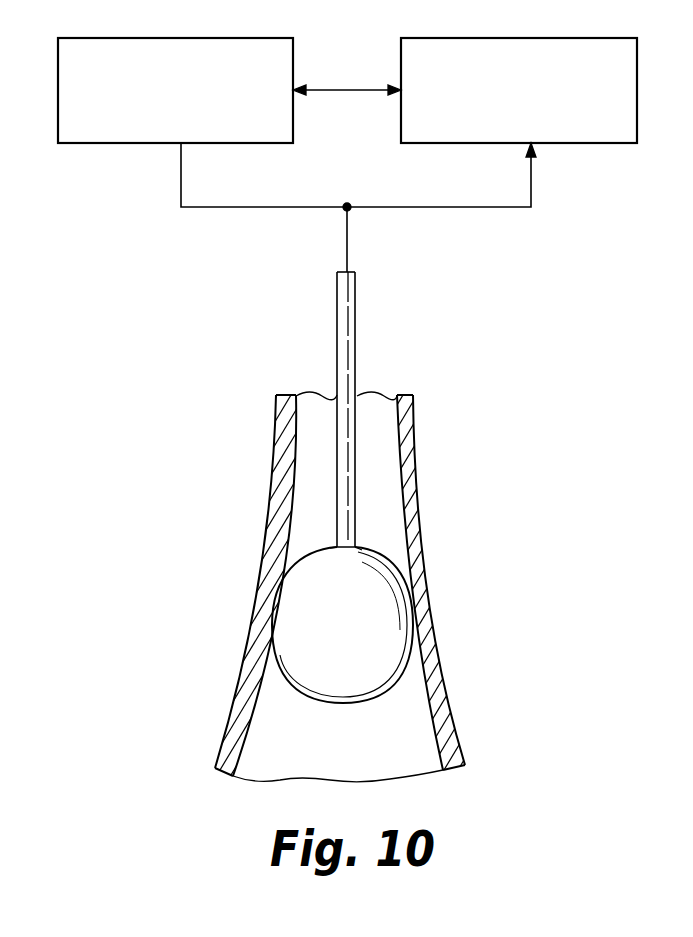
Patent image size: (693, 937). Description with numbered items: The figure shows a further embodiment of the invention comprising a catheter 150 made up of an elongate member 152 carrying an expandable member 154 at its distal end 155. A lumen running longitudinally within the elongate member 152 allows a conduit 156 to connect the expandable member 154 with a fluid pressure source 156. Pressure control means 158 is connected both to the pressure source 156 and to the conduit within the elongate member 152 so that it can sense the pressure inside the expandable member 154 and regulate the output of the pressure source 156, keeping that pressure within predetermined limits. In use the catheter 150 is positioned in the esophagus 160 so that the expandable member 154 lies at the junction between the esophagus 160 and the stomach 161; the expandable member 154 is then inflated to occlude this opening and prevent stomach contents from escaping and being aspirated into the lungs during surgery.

The catheter 150 is at (361, 487).
The elongate member 152 is at (336, 425).
The expandable member 154 is at (385, 593).
The distal end 155 is at (360, 476).
The fluid pressure source 156 is at (146, 136).
The pressure control means 158 is at (612, 127).
The esophagus 160 is at (305, 522).
The stomach 161 is at (357, 748).